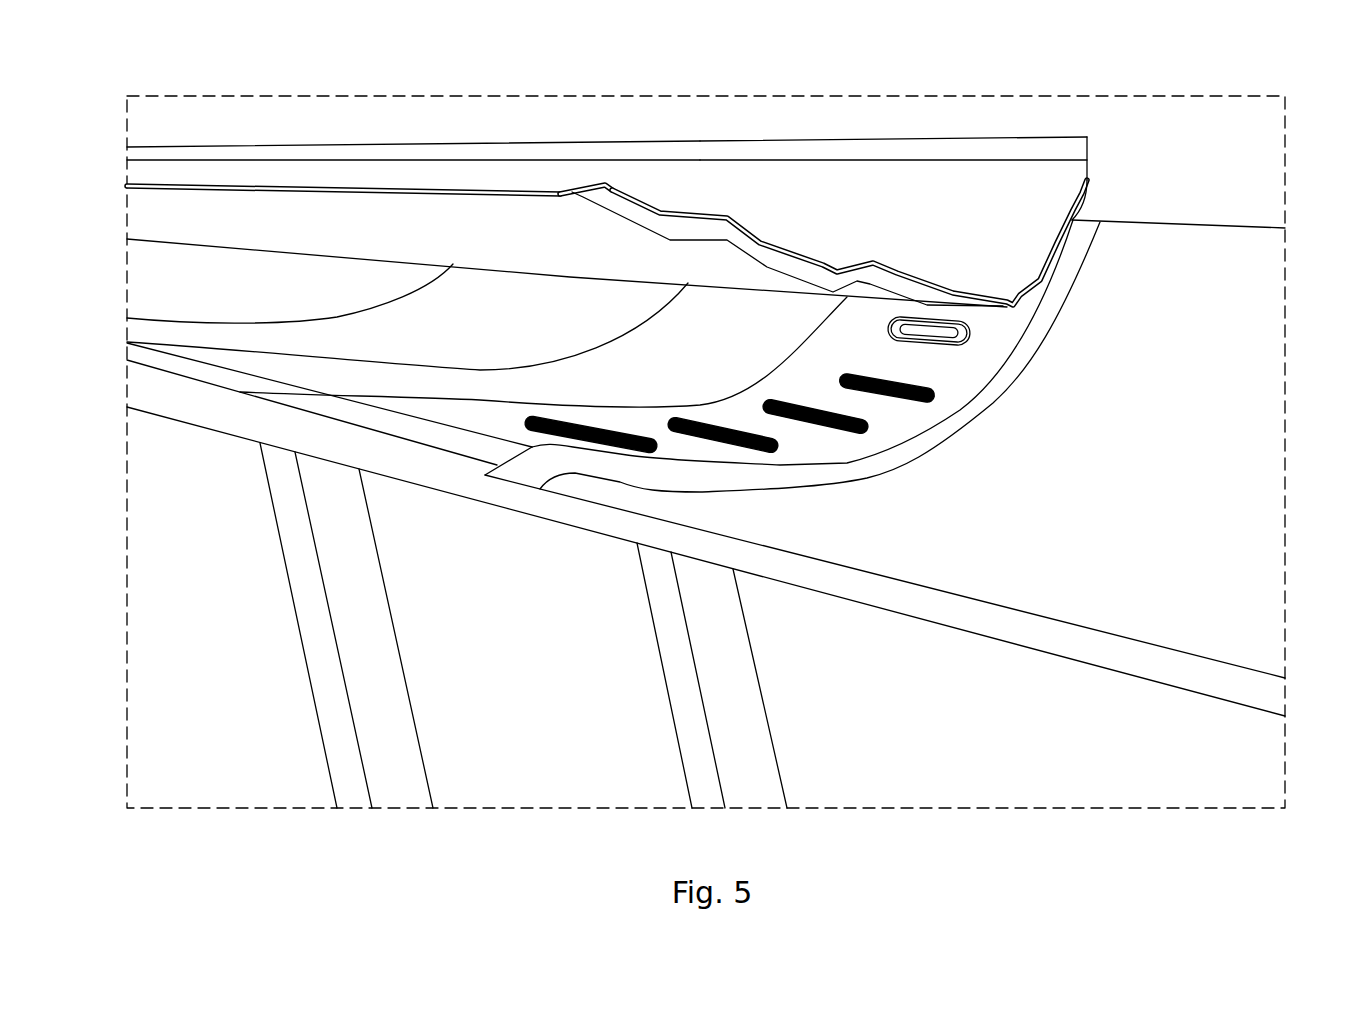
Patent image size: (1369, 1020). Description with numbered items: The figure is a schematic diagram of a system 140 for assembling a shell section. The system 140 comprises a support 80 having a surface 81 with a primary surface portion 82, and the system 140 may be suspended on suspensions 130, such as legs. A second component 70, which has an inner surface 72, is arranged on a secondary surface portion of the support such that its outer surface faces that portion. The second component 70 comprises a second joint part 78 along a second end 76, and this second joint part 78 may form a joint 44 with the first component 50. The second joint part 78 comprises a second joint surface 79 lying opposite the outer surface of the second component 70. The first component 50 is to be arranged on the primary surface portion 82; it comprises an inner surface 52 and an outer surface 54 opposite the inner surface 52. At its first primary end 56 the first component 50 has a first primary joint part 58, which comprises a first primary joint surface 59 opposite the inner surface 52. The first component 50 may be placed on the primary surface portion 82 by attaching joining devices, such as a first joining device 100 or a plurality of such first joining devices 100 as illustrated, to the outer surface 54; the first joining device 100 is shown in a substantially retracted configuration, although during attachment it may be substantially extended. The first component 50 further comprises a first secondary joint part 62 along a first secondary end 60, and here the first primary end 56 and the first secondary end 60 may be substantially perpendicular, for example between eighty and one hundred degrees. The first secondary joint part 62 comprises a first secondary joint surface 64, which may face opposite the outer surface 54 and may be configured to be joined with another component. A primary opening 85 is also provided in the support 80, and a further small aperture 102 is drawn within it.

The joint 44 is at (1128, 168).
The first component 50 is at (383, 172).
The inner surface 52 is at (533, 172).
The outer surface 54 is at (488, 222).
The first primary end 56 is at (658, 208).
The first primary joint part 58 is at (605, 165).
The first primary joint surface 59 is at (620, 200).
The first secondary end 60 is at (972, 137).
The first secondary joint part 62 is at (870, 124).
The first secondary joint surface 64 is at (913, 153).
The second component 70 is at (963, 565).
The inner surface 72 is at (1113, 585).
The second end 76 is at (487, 471).
The second joint part 78 is at (484, 505).
The second joint surface 79 is at (527, 467).
The support 80 is at (252, 597).
The surface 81 is at (318, 373).
The primary surface portion 82 is at (157, 330).
The primary opening 85 is at (990, 323).
The first joining device 100 is at (950, 368).
The aperture 102 is at (933, 328).
The suspensions 130 is at (405, 735).
The system 140 is at (1260, 172).